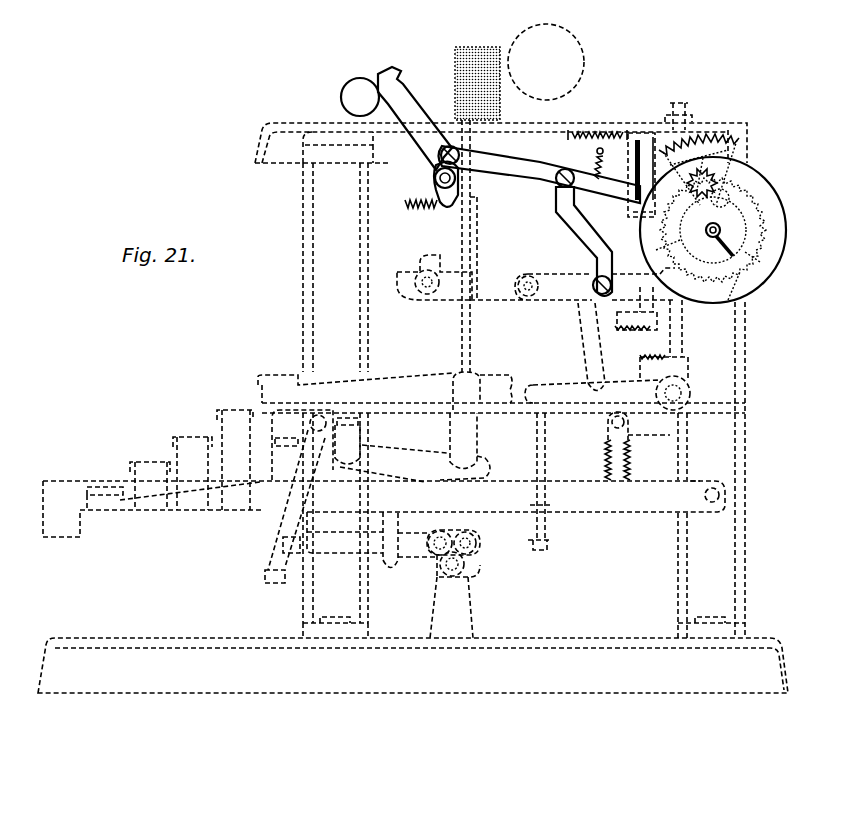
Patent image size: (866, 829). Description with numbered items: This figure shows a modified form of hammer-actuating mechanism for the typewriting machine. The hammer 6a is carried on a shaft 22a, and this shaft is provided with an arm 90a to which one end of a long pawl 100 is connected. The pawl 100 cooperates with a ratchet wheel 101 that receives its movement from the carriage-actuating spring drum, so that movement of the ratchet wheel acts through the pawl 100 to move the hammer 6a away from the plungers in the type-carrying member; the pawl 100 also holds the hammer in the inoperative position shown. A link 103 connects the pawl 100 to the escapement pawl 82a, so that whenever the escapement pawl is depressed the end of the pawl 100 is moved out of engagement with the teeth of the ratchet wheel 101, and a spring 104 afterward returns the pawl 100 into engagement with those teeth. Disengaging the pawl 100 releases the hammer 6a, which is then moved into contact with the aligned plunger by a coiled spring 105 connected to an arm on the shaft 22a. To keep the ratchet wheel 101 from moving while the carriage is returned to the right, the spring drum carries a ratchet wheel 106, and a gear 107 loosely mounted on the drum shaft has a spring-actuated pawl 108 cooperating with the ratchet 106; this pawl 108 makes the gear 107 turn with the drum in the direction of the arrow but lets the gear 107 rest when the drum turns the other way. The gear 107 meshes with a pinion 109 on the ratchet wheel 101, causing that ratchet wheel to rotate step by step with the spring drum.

The hammer 6a is at (395, 100).
The shaft 22a is at (434, 182).
The arm 90a is at (466, 168).
The coiled spring 105 is at (425, 209).
The pawl 100 is at (527, 170).
The link 103 is at (560, 215).
The spring 104 is at (621, 178).
The escapement pawl 82a is at (565, 291).
The ratchet wheel 101 is at (733, 97).
The pinion 109 is at (705, 188).
The spring-actuated pawl 108 is at (715, 200).
The gear 107 is at (780, 212).
The ratchet wheel 106 is at (745, 237).